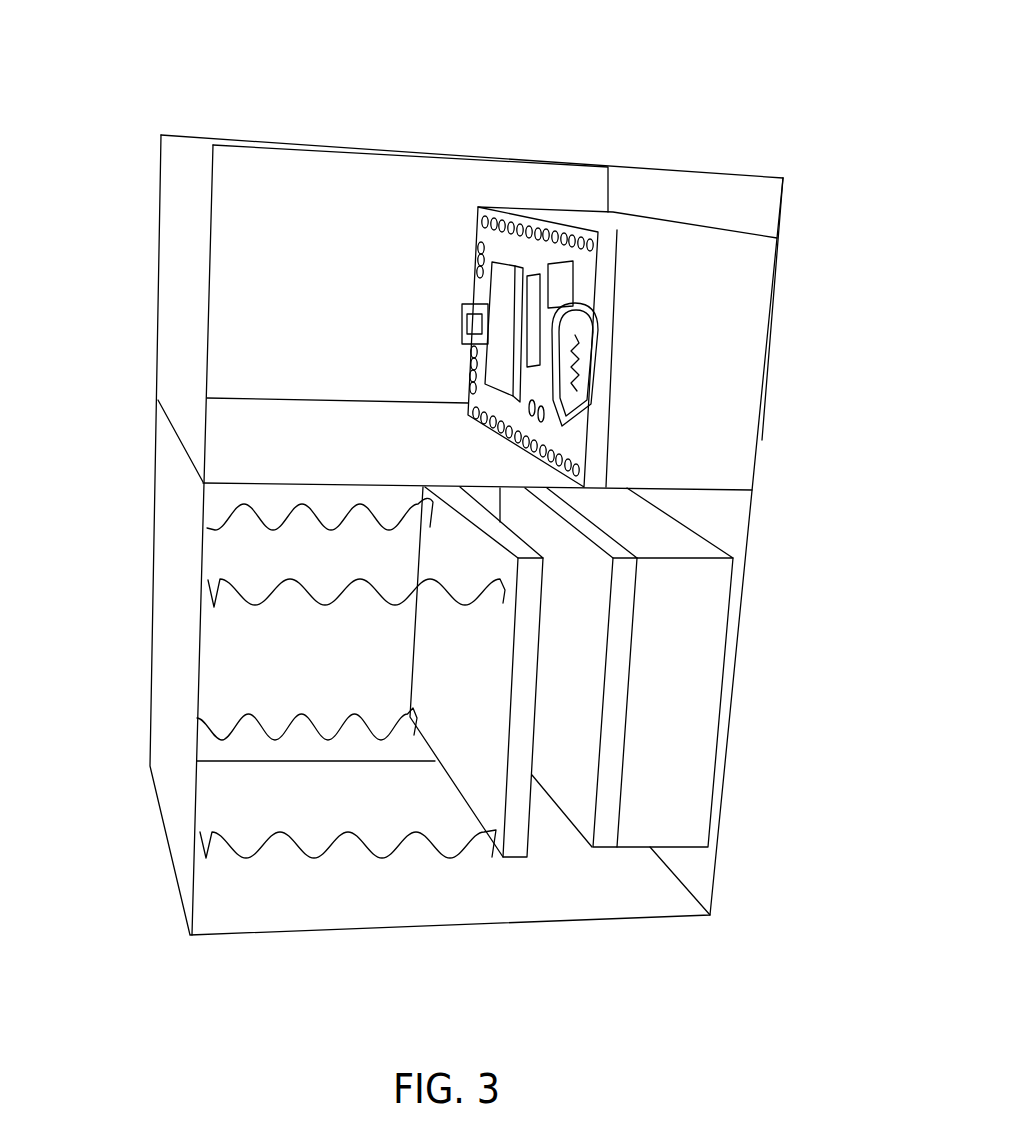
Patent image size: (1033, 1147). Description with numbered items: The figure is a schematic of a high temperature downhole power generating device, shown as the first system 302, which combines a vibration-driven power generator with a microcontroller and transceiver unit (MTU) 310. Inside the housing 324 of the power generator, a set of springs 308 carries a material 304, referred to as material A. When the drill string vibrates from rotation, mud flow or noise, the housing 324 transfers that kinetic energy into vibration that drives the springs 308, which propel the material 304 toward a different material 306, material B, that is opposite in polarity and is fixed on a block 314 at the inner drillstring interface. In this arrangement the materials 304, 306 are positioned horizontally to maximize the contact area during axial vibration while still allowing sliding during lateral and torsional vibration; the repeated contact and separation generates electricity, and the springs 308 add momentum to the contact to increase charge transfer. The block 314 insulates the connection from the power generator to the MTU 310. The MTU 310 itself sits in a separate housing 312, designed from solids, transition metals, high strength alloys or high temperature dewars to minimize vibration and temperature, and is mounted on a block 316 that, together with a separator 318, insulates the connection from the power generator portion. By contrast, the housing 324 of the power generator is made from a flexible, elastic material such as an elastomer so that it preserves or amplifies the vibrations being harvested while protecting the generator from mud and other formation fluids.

The first system 302 is at (632, 53).
The material 304 is at (421, 727).
The material 306 is at (602, 702).
The springs 308 is at (463, 865).
The microcontroller and transceiver unit 310 is at (598, 305).
The housing 312 is at (304, 140).
The block 314 is at (705, 625).
The block 316 is at (725, 290).
The separator 318 is at (255, 420).
The housing 324 is at (150, 735).